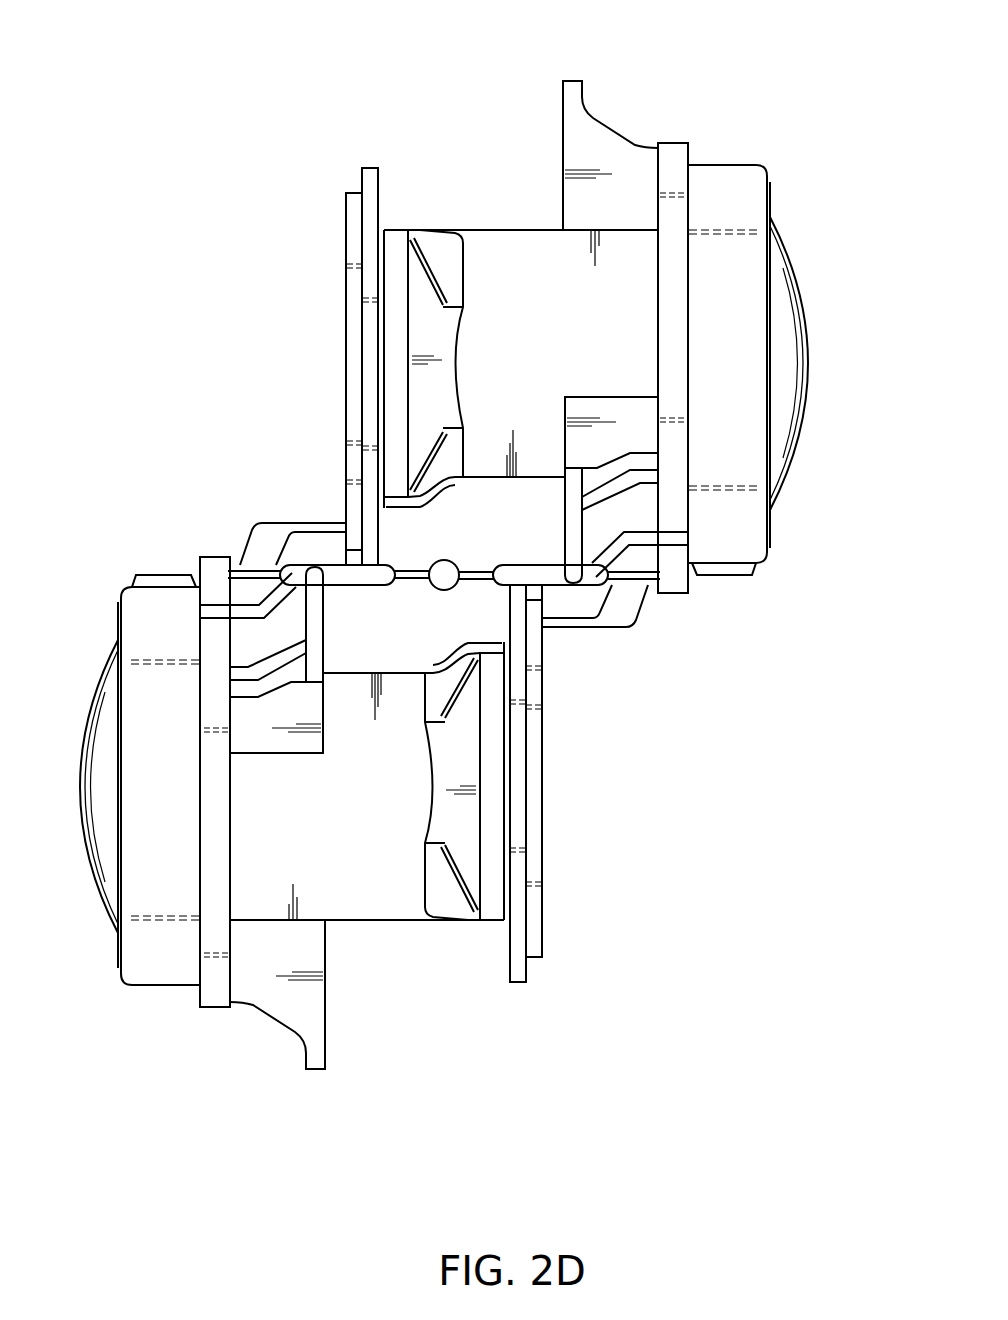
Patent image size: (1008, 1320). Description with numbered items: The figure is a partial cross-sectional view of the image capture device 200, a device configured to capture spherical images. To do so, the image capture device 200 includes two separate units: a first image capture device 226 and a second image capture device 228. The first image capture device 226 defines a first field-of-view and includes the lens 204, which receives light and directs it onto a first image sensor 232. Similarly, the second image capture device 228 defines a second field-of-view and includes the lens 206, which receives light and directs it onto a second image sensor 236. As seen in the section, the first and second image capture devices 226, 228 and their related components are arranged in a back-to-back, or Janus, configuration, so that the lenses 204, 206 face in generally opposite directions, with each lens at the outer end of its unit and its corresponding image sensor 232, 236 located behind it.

The image capture device 200 is at (462, 549).
The lens 204 is at (100, 746).
The lens 206 is at (788, 327).
The first image capture device 226 is at (337, 818).
The second image capture device 228 is at (569, 306).
The first image sensor 232 is at (526, 790).
The second image sensor 236 is at (358, 357).